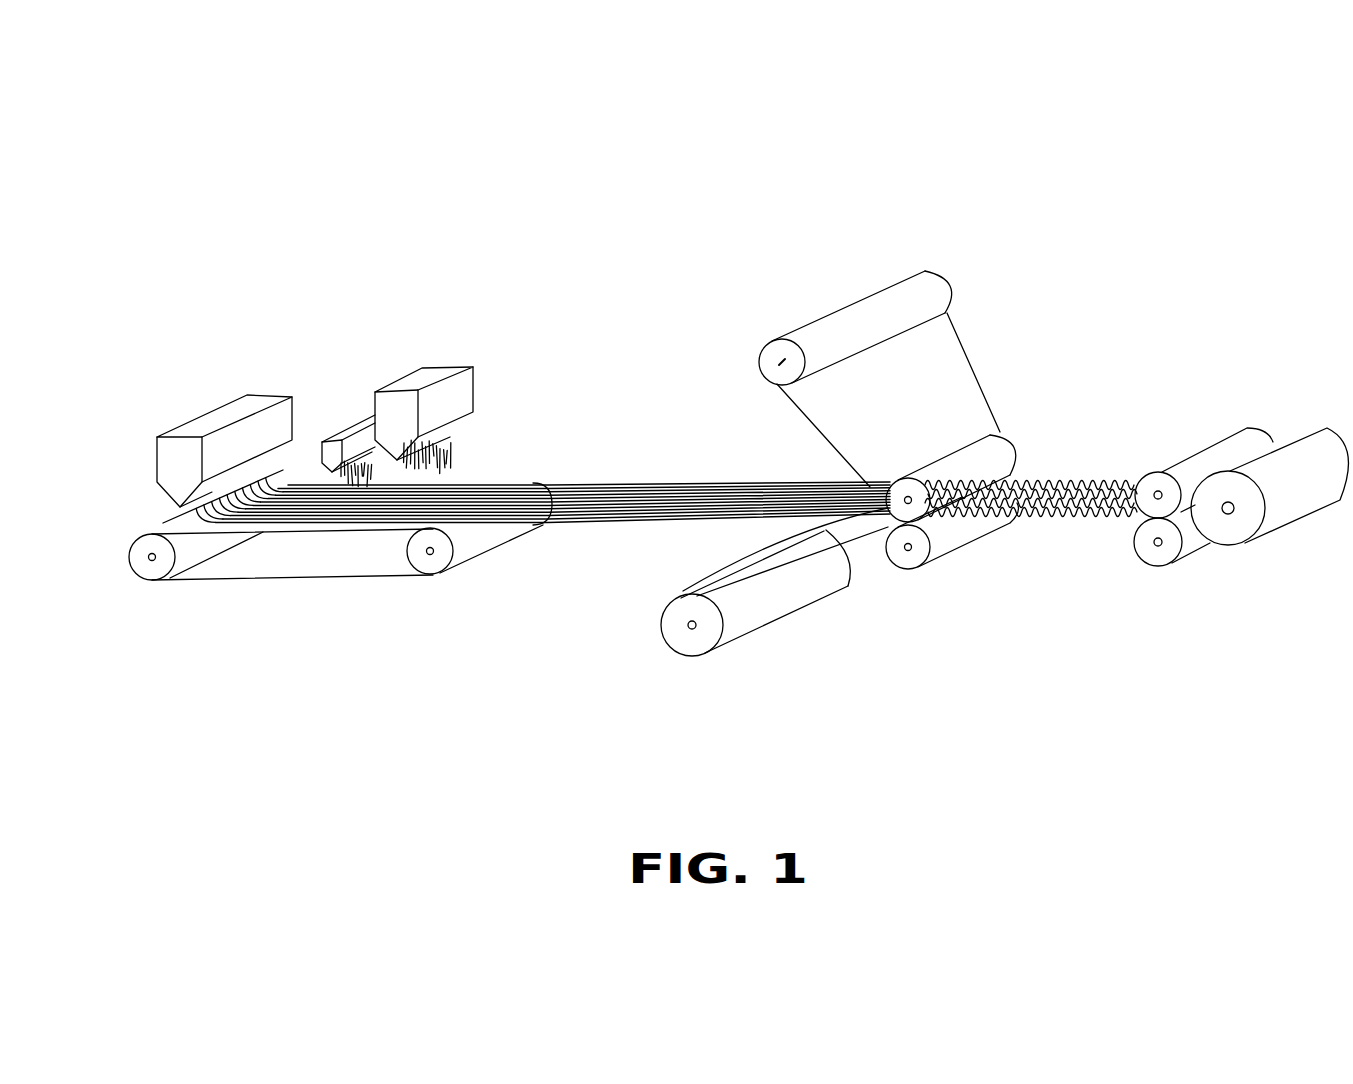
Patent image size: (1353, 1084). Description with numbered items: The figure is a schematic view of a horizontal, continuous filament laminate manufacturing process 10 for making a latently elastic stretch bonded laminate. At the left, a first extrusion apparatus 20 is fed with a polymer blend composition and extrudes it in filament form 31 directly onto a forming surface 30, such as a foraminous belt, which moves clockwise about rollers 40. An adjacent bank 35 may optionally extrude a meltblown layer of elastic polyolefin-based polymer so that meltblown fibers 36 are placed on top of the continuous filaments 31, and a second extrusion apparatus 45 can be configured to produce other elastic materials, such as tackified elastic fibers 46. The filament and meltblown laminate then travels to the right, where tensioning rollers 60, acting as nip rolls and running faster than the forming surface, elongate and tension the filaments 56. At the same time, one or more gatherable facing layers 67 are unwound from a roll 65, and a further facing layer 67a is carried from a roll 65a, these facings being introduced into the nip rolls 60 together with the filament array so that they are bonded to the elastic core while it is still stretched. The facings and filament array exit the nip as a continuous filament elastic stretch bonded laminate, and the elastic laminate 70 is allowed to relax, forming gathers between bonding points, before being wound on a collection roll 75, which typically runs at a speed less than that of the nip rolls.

The continuous filament laminate manufacturing process 10 is at (673, 382).
The first extrusion apparatus 20 is at (221, 414).
The forming surface 30 is at (276, 533).
The filaments 31 is at (168, 524).
The adjacent bank 35 is at (363, 423).
The meltblown fibers 36 is at (363, 488).
The rollers 40 is at (151, 577).
The second extrusion apparatus 45 is at (424, 367).
The third fibers 46 is at (450, 462).
The filaments 56 is at (705, 518).
The tensioning rollers (nip rolls) 60 is at (957, 468).
The roll 65 is at (690, 643).
The upper belt roller 65a is at (883, 288).
The gatherable facing layer 67 is at (860, 529).
The upper belt 67a is at (958, 358).
The elastic laminate 70 is at (1050, 516).
The collection roll 75 is at (1315, 447).